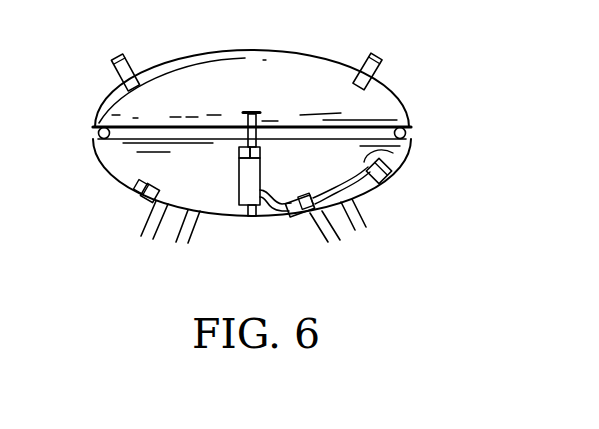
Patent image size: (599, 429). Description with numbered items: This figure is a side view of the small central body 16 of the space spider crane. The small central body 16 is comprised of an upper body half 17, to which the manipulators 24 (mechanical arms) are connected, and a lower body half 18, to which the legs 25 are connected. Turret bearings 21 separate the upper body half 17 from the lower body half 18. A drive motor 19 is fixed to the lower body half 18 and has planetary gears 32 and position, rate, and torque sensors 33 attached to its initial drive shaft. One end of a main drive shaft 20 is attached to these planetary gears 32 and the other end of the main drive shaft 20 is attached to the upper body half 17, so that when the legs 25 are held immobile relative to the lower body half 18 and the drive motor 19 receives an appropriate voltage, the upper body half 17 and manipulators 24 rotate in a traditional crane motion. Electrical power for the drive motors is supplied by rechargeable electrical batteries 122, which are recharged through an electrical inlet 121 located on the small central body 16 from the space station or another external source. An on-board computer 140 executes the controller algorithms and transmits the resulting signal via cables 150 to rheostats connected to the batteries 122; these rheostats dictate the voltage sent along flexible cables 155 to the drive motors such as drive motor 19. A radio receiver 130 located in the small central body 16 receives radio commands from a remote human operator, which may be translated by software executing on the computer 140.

The small central body 16 is at (429, 116).
The upper body half 17 is at (223, 59).
The lower body half 18 is at (118, 170).
The drive motor 19 is at (239, 186).
The main drive shaft 20 is at (257, 118).
The turret bearings 21 is at (407, 133).
The manipulators 24 is at (108, 69).
The legs 25 is at (148, 221).
The planetary gears 32 is at (260, 151).
The position, rate, and torque sensors 33 is at (239, 153).
The electrical inlet 121 is at (307, 189).
The rechargeable electrical batteries 122 is at (295, 216).
The radio receiver 130 is at (143, 181).
The computer 140 is at (392, 180).
The cables 150 is at (393, 153).
The flexible cables 155 is at (272, 215).